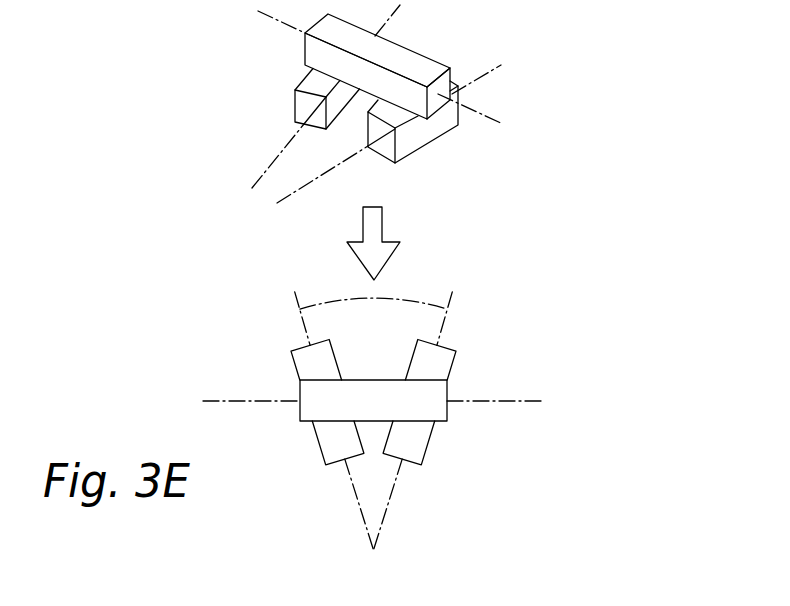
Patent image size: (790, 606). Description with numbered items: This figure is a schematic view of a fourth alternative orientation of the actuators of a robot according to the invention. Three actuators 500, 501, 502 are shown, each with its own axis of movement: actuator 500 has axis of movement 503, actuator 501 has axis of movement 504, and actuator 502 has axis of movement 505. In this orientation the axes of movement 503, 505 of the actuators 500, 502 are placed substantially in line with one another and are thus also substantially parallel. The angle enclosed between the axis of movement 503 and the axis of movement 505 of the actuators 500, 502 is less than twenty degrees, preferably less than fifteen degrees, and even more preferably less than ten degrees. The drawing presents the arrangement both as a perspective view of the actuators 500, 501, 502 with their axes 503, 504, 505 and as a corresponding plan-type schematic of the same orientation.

The actuator 500 is at (412, 140).
The actuator 501 is at (298, 106).
The actuator 502 is at (420, 72).
The axis of movement 503 is at (298, 191).
The axis of movement 504 is at (262, 174).
The axis of movement 505 is at (487, 118).